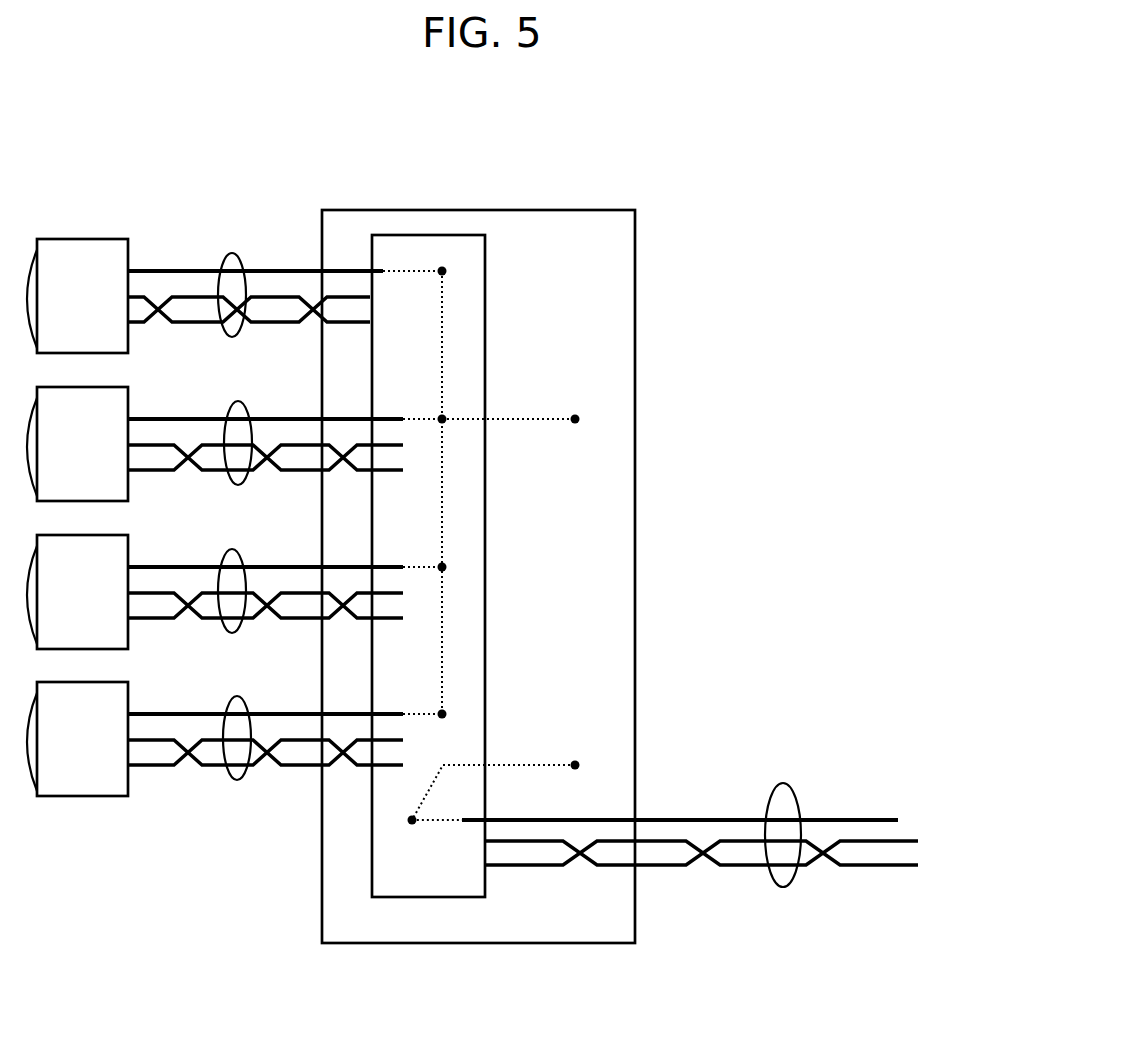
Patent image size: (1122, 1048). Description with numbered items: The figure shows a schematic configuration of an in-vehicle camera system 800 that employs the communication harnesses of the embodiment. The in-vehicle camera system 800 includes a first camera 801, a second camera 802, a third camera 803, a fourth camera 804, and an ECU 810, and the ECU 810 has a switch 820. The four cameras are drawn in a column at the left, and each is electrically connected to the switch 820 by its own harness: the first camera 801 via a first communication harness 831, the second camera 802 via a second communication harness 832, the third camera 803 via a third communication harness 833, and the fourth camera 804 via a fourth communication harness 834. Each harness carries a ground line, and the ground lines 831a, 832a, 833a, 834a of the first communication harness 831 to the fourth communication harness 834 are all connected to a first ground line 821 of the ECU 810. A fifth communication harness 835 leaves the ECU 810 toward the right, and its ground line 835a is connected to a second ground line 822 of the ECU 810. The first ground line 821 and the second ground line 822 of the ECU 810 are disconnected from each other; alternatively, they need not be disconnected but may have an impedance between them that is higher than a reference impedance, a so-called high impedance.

The in-vehicle camera system 800 is at (150, 150).
The first camera 801 is at (128, 258).
The second camera 802 is at (128, 406).
The third camera 803 is at (128, 554).
The fourth camera 804 is at (128, 701).
The first communication harness 831 is at (240, 256).
The ground line 831a is at (190, 271).
The second communication harness 832 is at (246, 404).
The ground line 832a is at (190, 419).
The third communication harness 833 is at (240, 552).
The ground line 833a is at (190, 567).
The fourth communication harness 834 is at (245, 699).
The ground line 834a is at (190, 714).
The ECU 810 is at (572, 210).
The switch 820 is at (425, 235).
The first ground line 821 is at (575, 418).
The second ground line 822 is at (575, 765).
The fifth communication harness 835 is at (783, 783).
The ground line 835a is at (685, 820).